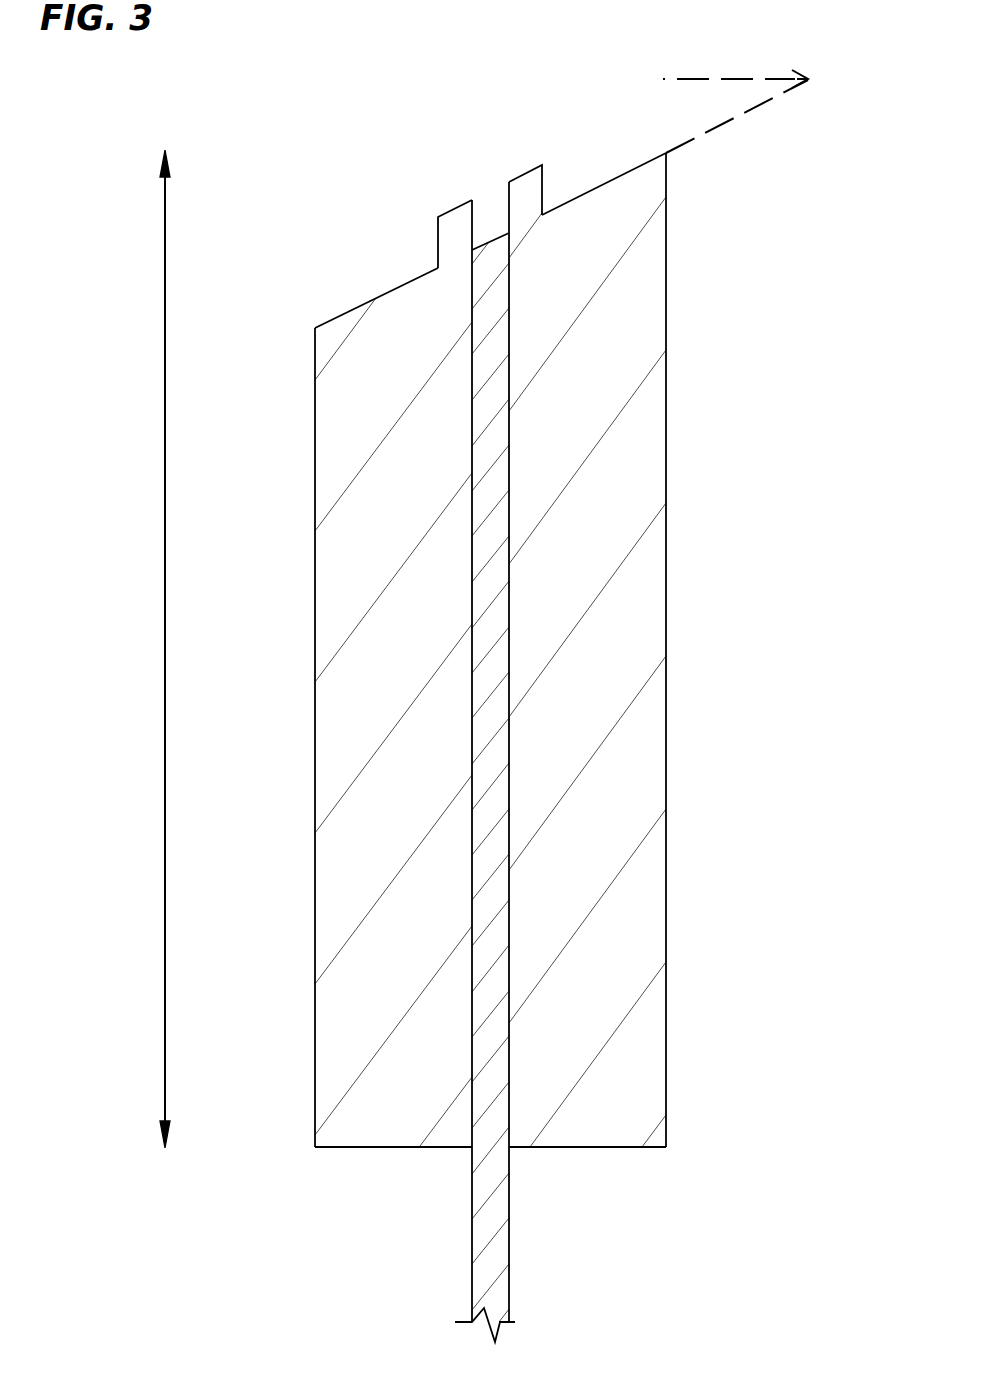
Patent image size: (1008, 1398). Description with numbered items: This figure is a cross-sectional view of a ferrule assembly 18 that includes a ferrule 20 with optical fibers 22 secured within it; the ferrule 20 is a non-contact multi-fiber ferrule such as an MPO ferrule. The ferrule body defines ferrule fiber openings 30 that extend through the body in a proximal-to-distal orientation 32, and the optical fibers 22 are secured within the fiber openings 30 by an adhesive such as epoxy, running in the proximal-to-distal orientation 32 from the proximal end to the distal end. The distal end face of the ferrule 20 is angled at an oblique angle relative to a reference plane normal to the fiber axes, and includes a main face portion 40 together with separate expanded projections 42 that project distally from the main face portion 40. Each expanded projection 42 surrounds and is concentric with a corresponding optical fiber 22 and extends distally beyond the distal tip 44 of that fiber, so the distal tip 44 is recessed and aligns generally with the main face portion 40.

The ferrule assembly 18 is at (770, 194).
The ferrule 20 is at (562, 627).
The optical fibers 22 is at (619, 687).
The ferrule fiber openings 30 is at (509, 748).
The proximal-to-distal orientation 32 is at (164, 609).
The main face portion 40 is at (380, 295).
The expanded projections 42 is at (453, 207).
The distal tip 44 is at (489, 238).